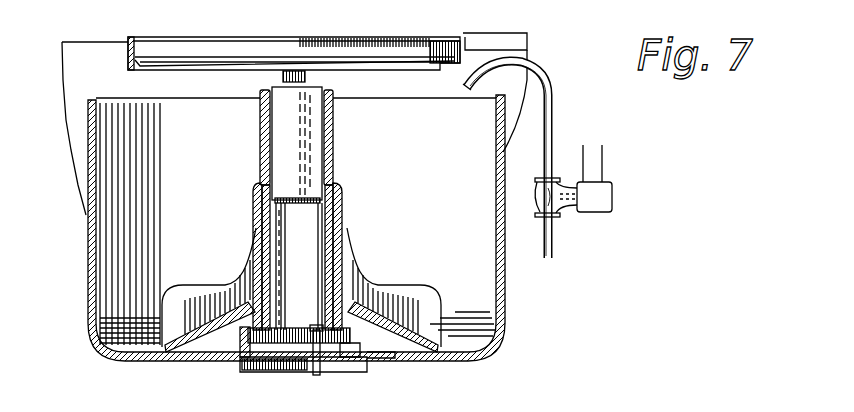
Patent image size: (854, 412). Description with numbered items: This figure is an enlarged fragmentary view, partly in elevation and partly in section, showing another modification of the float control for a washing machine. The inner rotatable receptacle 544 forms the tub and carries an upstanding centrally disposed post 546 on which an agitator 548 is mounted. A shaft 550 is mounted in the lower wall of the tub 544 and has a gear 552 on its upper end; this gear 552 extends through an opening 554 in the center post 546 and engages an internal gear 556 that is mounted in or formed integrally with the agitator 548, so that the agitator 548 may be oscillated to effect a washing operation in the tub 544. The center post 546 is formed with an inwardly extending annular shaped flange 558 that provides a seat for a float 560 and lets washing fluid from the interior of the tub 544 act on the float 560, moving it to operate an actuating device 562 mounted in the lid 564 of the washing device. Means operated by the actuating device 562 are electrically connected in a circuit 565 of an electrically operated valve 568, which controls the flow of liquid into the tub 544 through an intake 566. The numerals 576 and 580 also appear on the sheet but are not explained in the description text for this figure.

The inner rotatable receptacle 544 is at (503, 330).
The upstanding centrally disposed post 546 is at (330, 157).
The agitator 548 is at (342, 240).
The shaft 550 is at (316, 375).
The gear 552 is at (250, 377).
The opening 554 is at (347, 340).
The internal gear 556 is at (388, 356).
The inwardly extending annular shaped flange 558 is at (273, 215).
The float 560 is at (308, 125).
The actuating device 562 is at (305, 70).
The lid 564 is at (432, 33).
The circuit 565 is at (603, 157).
The intake 566 is at (545, 128).
The electrically operated valve 568 is at (560, 215).
The element 576 is at (636, 403).
The element 580 is at (709, 403).